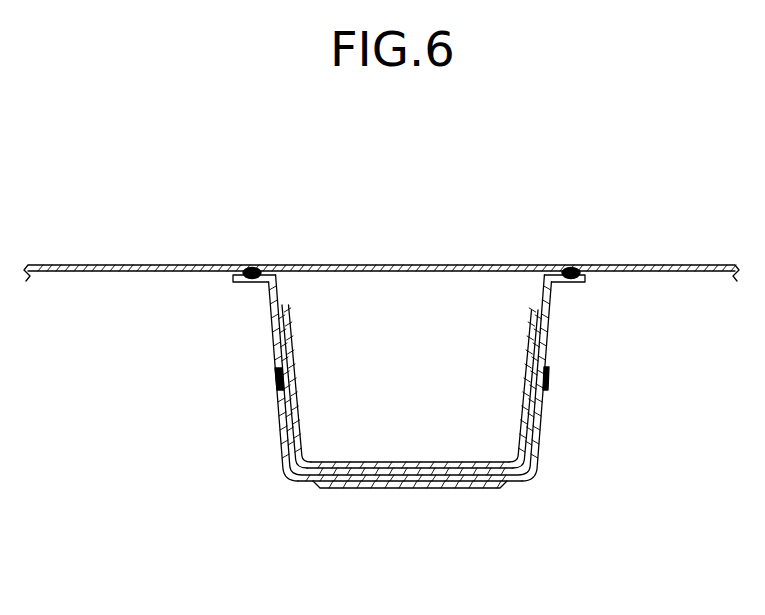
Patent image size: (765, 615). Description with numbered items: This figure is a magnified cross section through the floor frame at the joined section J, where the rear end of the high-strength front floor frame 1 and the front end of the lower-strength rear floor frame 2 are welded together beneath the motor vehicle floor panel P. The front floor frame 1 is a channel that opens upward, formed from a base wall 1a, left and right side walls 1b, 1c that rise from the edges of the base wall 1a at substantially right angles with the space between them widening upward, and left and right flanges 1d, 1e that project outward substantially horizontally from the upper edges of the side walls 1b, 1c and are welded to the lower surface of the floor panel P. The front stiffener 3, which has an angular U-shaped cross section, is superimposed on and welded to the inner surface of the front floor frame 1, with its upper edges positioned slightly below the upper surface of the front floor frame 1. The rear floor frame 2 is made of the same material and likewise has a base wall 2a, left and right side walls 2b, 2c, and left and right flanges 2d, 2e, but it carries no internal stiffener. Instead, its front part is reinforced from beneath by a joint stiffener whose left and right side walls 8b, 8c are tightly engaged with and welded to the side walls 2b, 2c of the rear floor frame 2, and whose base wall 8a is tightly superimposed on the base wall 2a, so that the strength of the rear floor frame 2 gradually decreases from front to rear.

The floor panel P is at (638, 265).
The front floor frame 1 is at (285, 288).
The base wall 1a is at (384, 476).
The left side wall 1b is at (285, 305).
The right side wall 1c is at (542, 290).
The left flange 1d is at (264, 268).
The right flange 1e is at (580, 268).
The rear floor frame 2 is at (552, 335).
The base wall 2a is at (488, 462).
The left side wall 2b is at (275, 330).
The right side wall 2c is at (549, 350).
The left flange 2d is at (240, 282).
The right flange 2e is at (578, 282).
The front stiffener 3 is at (297, 390).
The base wall 8a is at (410, 489).
The left side wall 8b is at (277, 432).
The right side wall 8c is at (543, 432).
The joined section J is at (279, 410).